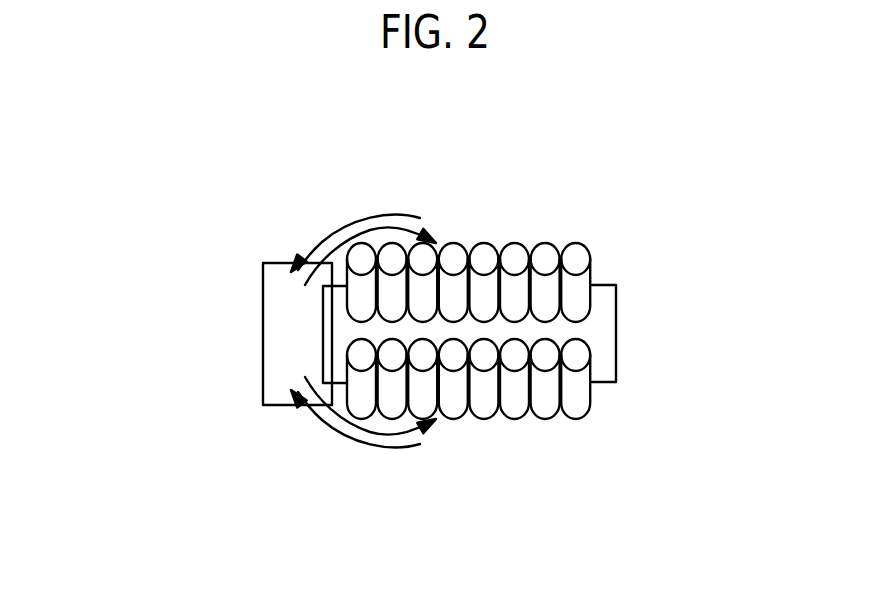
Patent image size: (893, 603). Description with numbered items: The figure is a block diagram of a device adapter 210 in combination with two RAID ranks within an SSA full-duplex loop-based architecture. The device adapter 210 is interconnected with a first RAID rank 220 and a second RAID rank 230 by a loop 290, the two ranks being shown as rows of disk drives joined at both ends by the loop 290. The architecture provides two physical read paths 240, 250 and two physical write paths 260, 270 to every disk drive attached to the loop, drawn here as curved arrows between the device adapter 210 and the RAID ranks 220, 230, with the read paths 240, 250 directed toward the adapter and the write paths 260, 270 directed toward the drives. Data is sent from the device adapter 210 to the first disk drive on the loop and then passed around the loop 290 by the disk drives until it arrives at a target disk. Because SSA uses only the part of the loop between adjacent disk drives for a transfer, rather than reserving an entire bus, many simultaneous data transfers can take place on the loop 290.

The device adapter 210 is at (263, 323).
The RAID rank 220 is at (590, 199).
The RAID rank 230 is at (590, 453).
The read path 240 is at (311, 246).
The read path 250 is at (311, 422).
The write path 260 is at (347, 241).
The write path 270 is at (347, 427).
The loop 290 is at (618, 324).